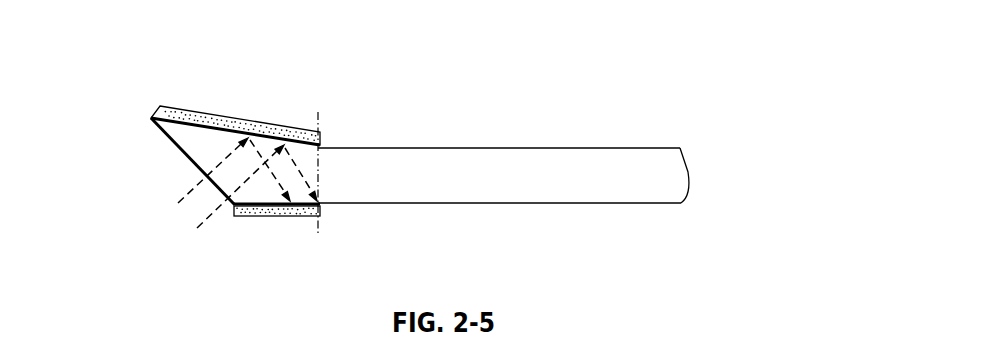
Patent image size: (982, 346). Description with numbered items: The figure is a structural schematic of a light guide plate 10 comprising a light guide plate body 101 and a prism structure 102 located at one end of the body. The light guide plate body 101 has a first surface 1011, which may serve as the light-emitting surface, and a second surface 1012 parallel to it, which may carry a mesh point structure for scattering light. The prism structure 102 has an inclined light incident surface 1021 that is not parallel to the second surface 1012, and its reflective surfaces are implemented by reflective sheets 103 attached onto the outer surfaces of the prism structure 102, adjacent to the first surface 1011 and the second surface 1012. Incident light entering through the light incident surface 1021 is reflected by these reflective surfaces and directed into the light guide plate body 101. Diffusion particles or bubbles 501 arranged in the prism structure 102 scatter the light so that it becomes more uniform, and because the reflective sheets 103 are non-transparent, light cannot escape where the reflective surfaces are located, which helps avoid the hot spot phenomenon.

The light guide plate 10 is at (435, 138).
The light guide plate body 101 is at (499, 138).
The prism structure 102 is at (236, 138).
The reflective sheets 103 is at (283, 130).
The diffusion particles or bubbles 501 is at (241, 222).
The first surface 1011 is at (485, 148).
The second surface 1012 is at (485, 203).
The light incident surface 1021 is at (189, 157).